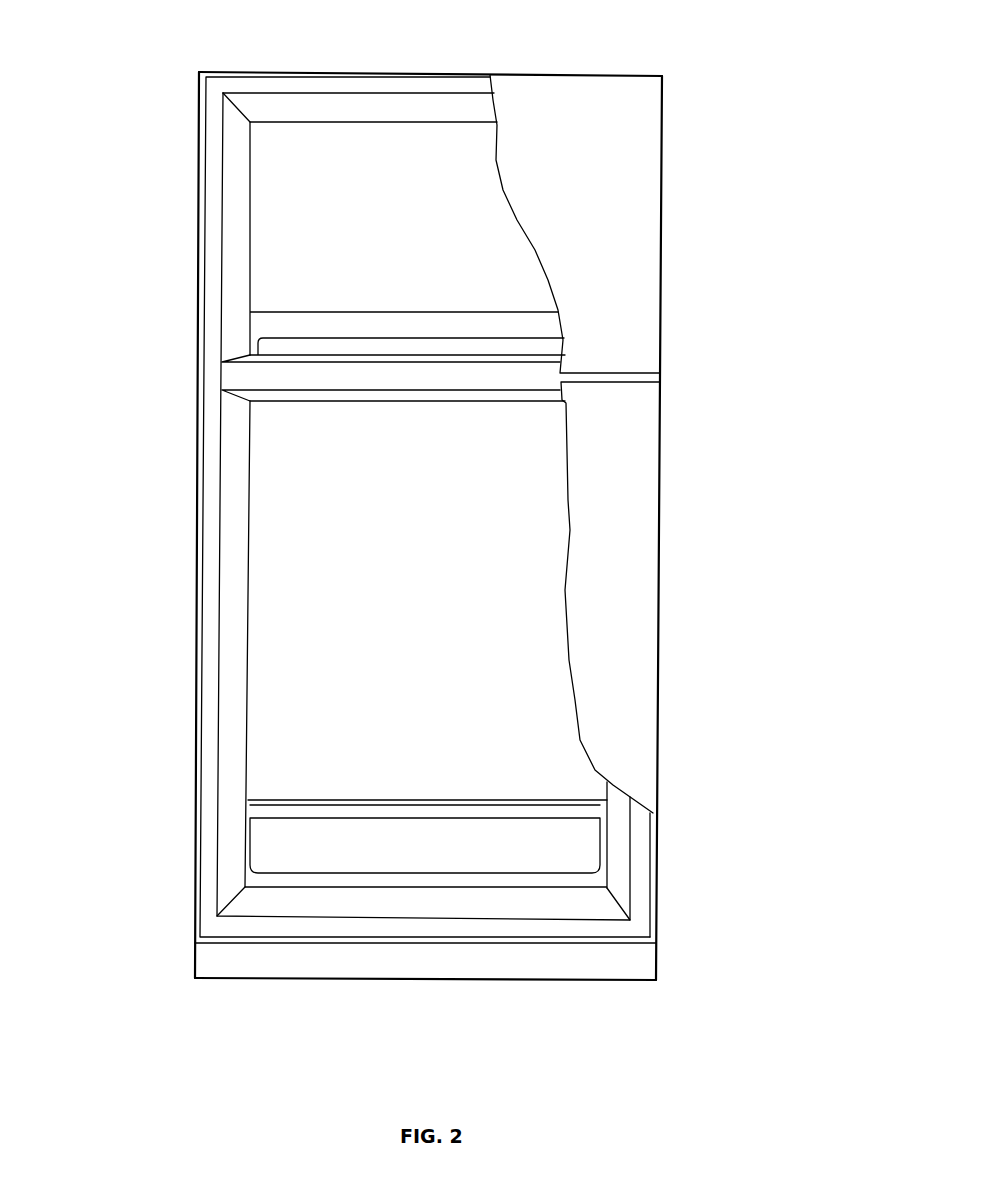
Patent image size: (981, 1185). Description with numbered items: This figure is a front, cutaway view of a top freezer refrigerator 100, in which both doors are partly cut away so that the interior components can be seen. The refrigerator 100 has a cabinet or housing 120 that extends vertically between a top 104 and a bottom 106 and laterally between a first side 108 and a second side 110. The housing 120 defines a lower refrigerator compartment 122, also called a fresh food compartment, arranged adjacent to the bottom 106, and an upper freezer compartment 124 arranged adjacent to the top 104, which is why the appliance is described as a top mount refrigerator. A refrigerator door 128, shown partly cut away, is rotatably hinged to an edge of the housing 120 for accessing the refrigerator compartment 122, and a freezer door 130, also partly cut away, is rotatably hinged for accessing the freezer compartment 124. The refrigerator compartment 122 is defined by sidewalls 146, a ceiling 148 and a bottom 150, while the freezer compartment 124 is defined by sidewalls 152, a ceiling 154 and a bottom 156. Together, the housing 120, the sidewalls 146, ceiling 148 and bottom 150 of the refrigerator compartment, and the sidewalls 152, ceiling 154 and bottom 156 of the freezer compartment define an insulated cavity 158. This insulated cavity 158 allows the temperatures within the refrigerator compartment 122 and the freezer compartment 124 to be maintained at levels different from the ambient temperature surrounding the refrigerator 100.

The refrigerator 100 is at (705, 90).
The top 104 is at (551, 75).
The bottom 106 is at (557, 981).
The first side 108 is at (660, 463).
The second side 110 is at (195, 470).
The housing 120 is at (657, 875).
The refrigerator compartment 122 is at (345, 565).
The freezer compartment 124 is at (325, 157).
The refrigerator door 128 is at (627, 547).
The freezer door 130 is at (637, 235).
The sidewalls 146 is at (232, 778).
The ceiling 148 is at (352, 393).
The bottom 150 is at (270, 898).
The sidewalls 152 is at (237, 257).
The ceiling 154 is at (388, 108).
The bottom 156 is at (433, 360).
The insulated cavity 158 is at (218, 87).